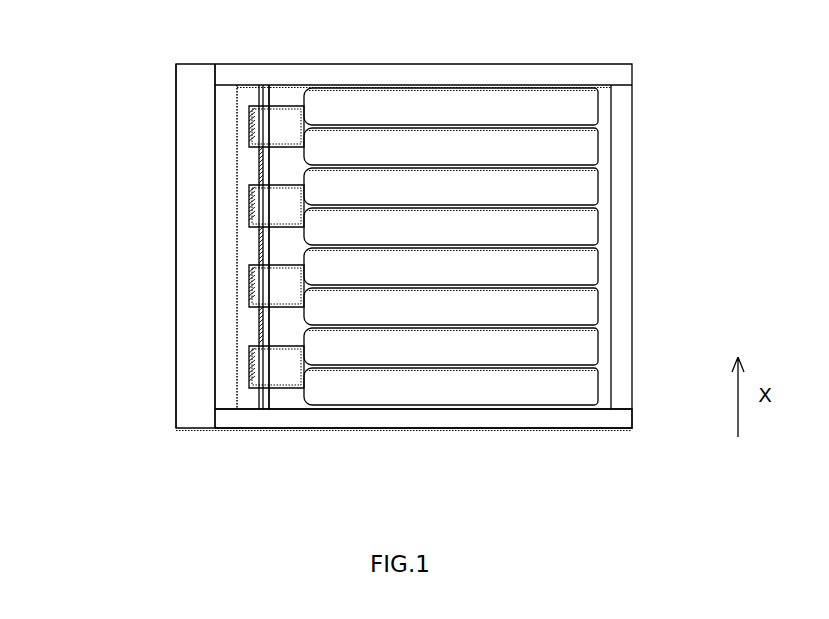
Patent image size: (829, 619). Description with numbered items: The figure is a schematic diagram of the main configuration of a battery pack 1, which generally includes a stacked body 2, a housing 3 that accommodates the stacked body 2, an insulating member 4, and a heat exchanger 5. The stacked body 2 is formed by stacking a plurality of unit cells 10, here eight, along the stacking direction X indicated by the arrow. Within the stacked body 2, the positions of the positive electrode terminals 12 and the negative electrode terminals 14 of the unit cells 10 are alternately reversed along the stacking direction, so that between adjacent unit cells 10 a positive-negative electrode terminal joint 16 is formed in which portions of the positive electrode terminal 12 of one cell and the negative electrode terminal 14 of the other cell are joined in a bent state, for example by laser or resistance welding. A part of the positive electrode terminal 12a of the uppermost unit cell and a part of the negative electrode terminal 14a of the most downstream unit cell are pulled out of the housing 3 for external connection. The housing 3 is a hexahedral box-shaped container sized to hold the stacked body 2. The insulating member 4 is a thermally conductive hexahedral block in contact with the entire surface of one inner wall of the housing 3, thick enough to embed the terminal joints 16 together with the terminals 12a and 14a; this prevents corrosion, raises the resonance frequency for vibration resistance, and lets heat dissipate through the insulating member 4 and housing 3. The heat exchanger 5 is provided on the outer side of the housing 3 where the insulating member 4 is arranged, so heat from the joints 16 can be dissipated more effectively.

The battery pack 1 is at (46, 41).
The stacked body 2 is at (413, 85).
The housing 3 is at (520, 422).
The insulating member 4 is at (247, 328).
The heat exchanger 5 is at (203, 403).
The unit cell 10 is at (500, 100).
The positive electrode terminal 12 is at (250, 146).
The positive electrode terminal of uppermost unit cell 12a is at (253, 100).
The negative electrode terminal 14 is at (250, 107).
The negative electrode terminal of most downstream unit cell 14a is at (257, 403).
The positive-negative electrode terminal joint 16 is at (258, 168).